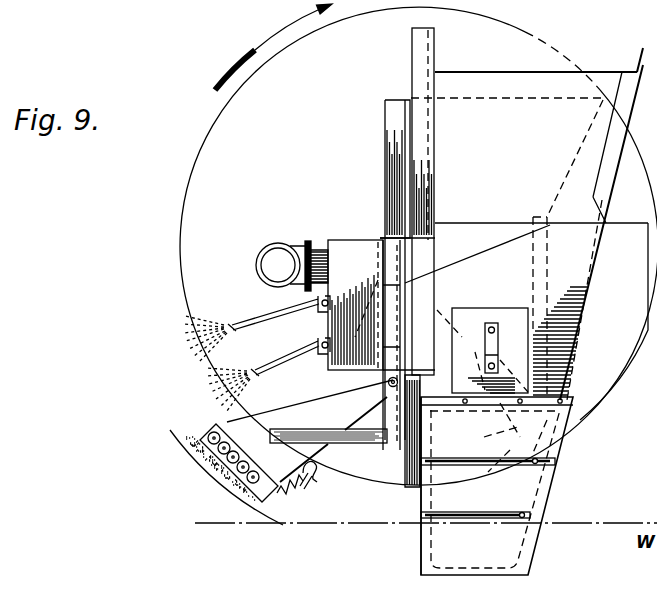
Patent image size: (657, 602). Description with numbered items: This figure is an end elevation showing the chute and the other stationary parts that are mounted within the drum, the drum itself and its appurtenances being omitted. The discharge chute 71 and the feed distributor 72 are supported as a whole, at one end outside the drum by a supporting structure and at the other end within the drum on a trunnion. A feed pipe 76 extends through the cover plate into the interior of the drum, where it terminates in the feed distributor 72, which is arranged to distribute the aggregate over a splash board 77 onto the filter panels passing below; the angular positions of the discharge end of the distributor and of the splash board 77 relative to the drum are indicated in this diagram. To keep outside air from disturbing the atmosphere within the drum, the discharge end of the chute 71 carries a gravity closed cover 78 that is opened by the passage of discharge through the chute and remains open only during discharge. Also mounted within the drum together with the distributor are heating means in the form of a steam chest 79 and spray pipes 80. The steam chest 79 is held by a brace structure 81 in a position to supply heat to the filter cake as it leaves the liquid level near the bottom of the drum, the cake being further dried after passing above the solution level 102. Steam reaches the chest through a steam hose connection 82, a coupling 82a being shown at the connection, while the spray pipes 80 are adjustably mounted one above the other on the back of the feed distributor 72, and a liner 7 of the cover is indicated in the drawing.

The discharge chute 71 is at (501, 234).
The feed distributor 72 is at (360, 240).
The feed pipe 76 is at (275, 250).
The spray pipes 80 is at (257, 353).
The pivot nut 82a is at (388, 383).
The brace structure 81 is at (378, 443).
The steam hose connection 82 is at (303, 482).
The steam chest 79 is at (222, 428).
The solution level 102 is at (348, 525).
The gravity closed cover 78 is at (425, 540).
The splash board 77 is at (543, 493).
The hopper liner 7 is at (533, 547).